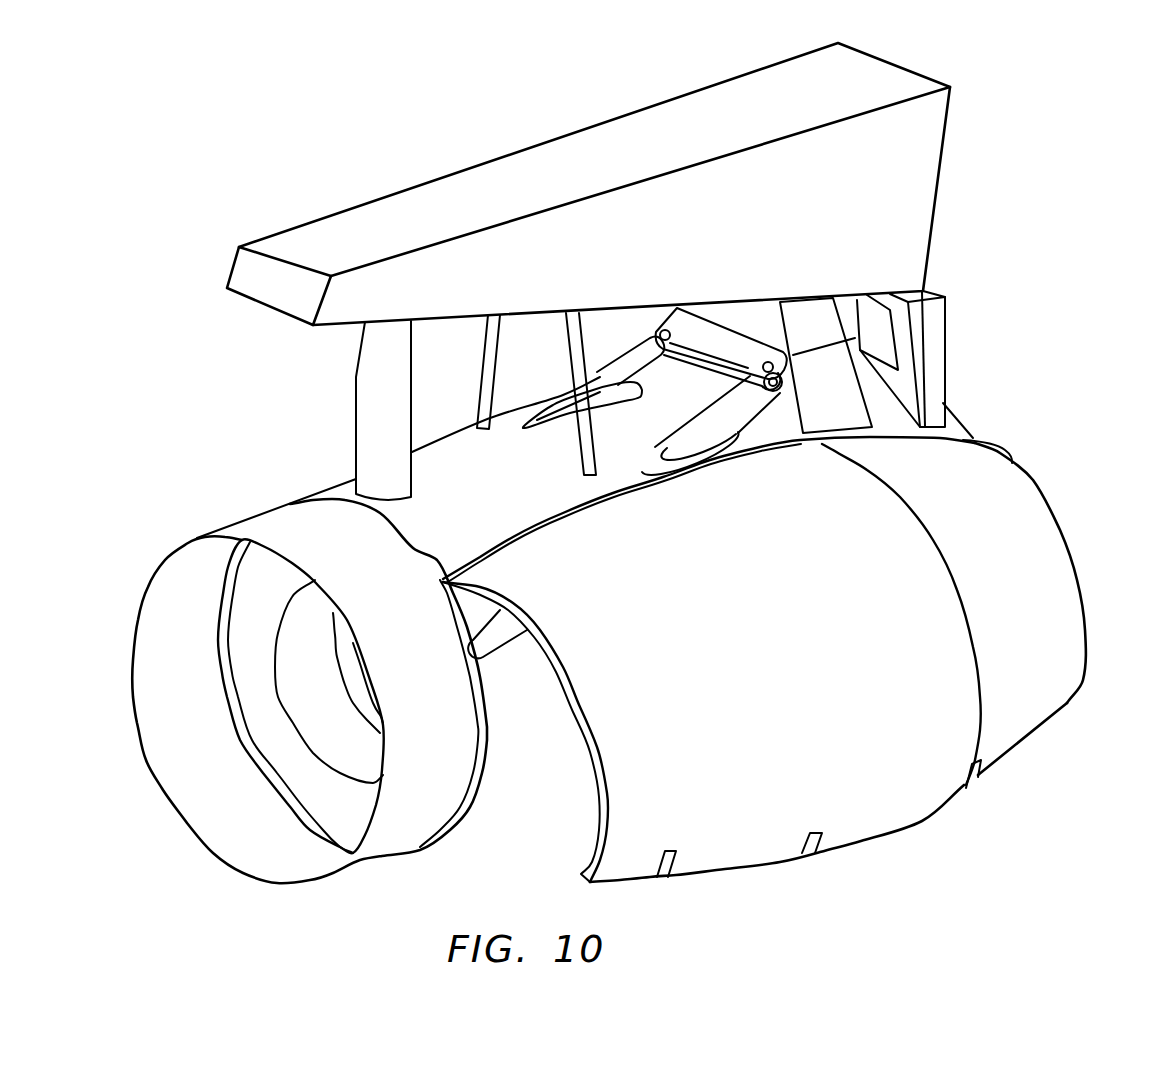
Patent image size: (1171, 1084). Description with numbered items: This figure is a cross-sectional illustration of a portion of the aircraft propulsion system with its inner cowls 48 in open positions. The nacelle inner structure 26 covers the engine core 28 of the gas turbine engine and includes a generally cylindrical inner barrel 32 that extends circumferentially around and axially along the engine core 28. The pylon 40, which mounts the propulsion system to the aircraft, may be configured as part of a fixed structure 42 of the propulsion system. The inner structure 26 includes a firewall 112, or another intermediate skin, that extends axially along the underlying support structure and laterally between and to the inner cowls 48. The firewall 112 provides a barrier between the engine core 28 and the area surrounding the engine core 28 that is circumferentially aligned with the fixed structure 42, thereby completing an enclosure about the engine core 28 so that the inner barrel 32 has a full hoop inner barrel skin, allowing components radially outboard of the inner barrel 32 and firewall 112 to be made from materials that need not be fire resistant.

The firewall 112 is at (470, 482).
The pylon 40 is at (858, 347).
The fixed structure 42 is at (950, 302).
The engine core 28 is at (342, 878).
The nacelle inner structure 26 is at (1030, 447).
The inner barrel 32 is at (1040, 477).
The inner cowls 48 is at (721, 866).